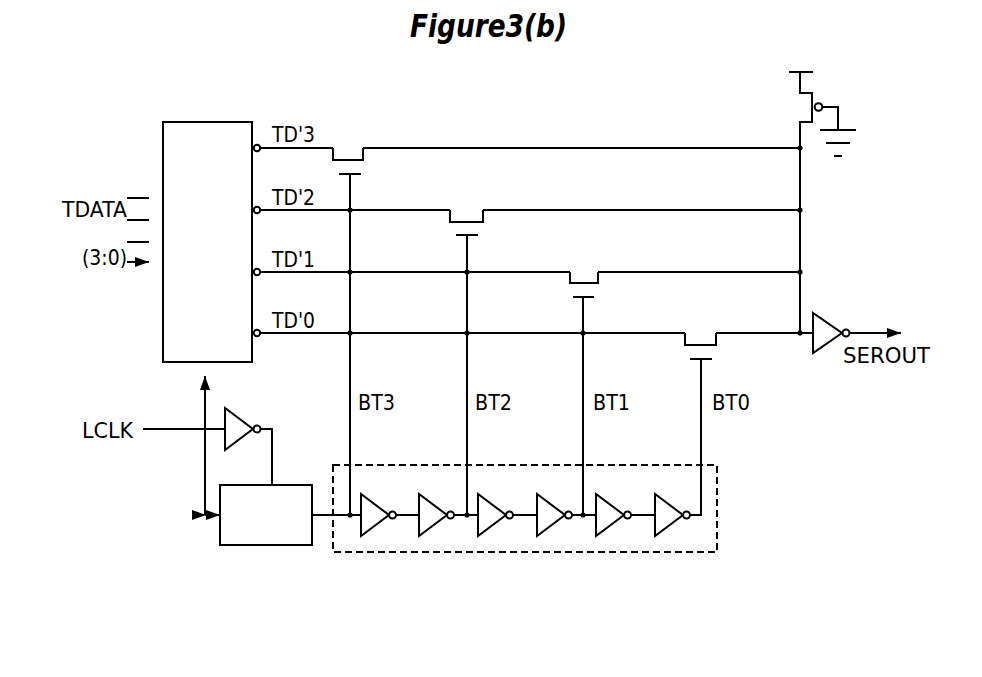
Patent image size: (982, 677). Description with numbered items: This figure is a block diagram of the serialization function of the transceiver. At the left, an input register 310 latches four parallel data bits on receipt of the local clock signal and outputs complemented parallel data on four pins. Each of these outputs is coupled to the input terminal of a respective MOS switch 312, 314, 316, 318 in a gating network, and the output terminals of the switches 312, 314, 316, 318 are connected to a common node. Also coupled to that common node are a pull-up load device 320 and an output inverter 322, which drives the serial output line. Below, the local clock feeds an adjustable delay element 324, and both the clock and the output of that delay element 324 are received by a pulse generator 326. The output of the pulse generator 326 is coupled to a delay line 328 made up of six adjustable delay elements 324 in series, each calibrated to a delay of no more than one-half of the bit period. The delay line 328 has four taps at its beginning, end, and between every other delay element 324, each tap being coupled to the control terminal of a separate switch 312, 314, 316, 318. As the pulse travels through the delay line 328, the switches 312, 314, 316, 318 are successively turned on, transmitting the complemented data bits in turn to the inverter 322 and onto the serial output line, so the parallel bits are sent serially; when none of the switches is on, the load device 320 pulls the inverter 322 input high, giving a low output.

The input register 310 is at (211, 229).
The switch 312 is at (347, 321).
The switch 314 is at (465, 350).
The switch 316 is at (584, 381).
The switch 318 is at (701, 412).
The pull-up load device 320 is at (809, 202).
The output inverter 322 is at (857, 324).
The adjustable delay element 324 is at (460, 465).
The pulse generator 326 is at (290, 502).
The delay line 328 is at (544, 494).